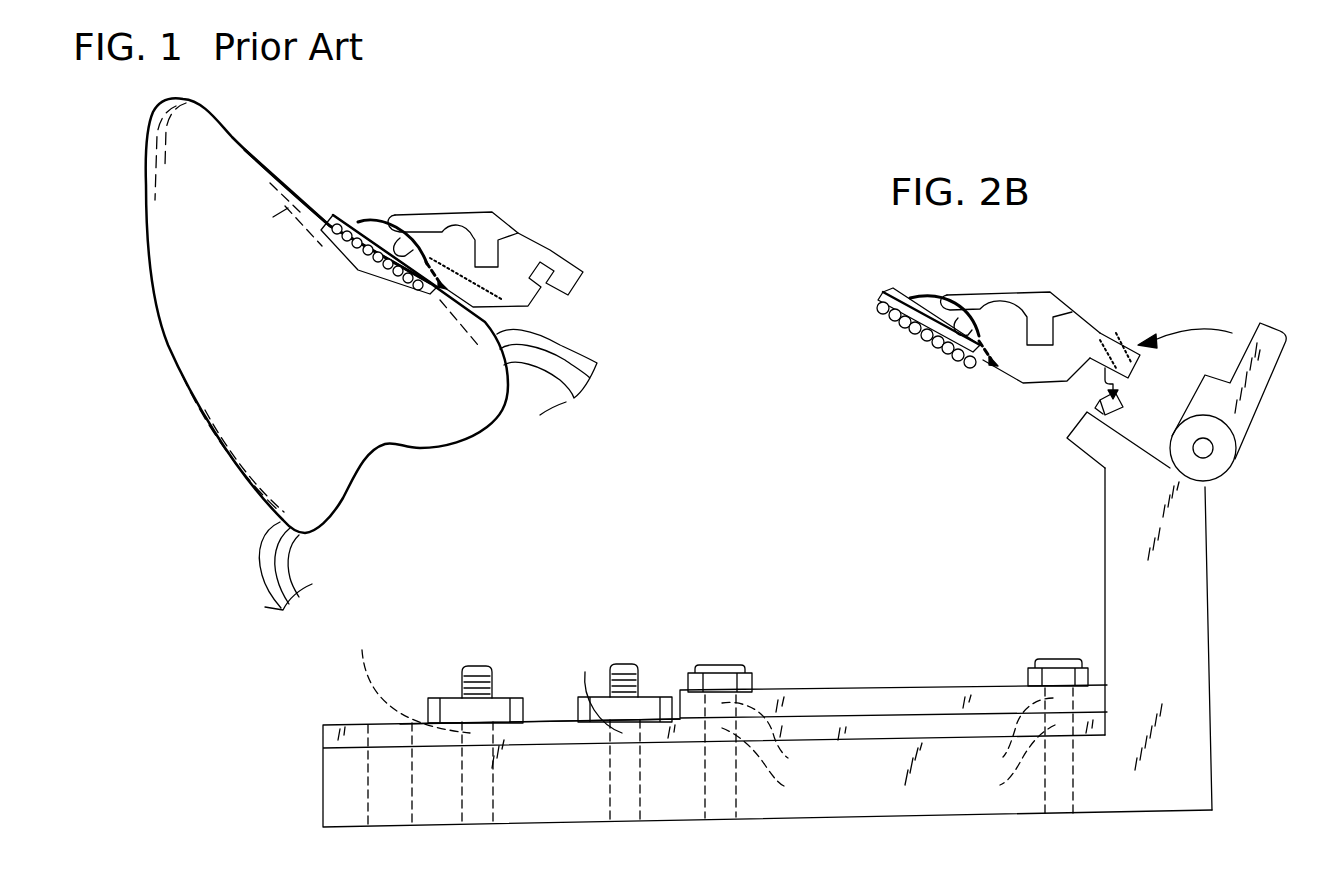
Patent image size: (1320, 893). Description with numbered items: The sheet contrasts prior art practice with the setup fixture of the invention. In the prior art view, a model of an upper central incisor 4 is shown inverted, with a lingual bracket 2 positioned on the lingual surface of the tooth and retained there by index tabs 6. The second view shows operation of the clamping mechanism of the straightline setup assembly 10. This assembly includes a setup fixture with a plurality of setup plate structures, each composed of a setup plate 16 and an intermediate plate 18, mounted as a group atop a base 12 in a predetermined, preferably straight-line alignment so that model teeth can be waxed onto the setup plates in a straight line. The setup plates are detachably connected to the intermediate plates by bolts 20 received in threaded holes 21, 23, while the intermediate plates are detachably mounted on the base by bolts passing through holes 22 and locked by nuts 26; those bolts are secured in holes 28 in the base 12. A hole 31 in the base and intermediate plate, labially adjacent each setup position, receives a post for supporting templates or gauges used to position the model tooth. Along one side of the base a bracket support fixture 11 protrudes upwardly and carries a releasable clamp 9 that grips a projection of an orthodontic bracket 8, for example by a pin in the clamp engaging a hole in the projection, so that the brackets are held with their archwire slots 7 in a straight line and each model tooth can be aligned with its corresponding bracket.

In FIG. 1, the lingual bracket 2 is at (553, 253).
In FIG. 1, the upper central incisor 4 is at (297, 210).
In FIG. 1, the index tabs 6 is at (262, 163).
In FIG. 2B, the archwire slot 7 is at (1040, 322).
In FIG. 2B, the orthodontic bracket 8 is at (1103, 330).
In FIG. 2B, the releasable clamp 9 is at (1272, 345).
In FIG. 2B, the straightline setup assembly 10 is at (1216, 605).
In FIG. 2B, the bracket support fixture 11 is at (1092, 428).
In FIG. 2B, the base 12 is at (888, 787).
In FIG. 2B, the setup plate 16 is at (913, 703).
In FIG. 2B, the intermediate plate 18 is at (546, 735).
In FIG. 2B, the bolts 20 is at (714, 665).
In FIG. 2B, the threaded hole 21 is at (887, 736).
In FIG. 2B, the holes 22 is at (486, 678).
In FIG. 2B, the threaded hole 23 is at (888, 764).
In FIG. 2B, the nuts 26 is at (447, 712).
In FIG. 2B, the holes 28 is at (477, 797).
In FIG. 2B, the hole 31 is at (386, 806).